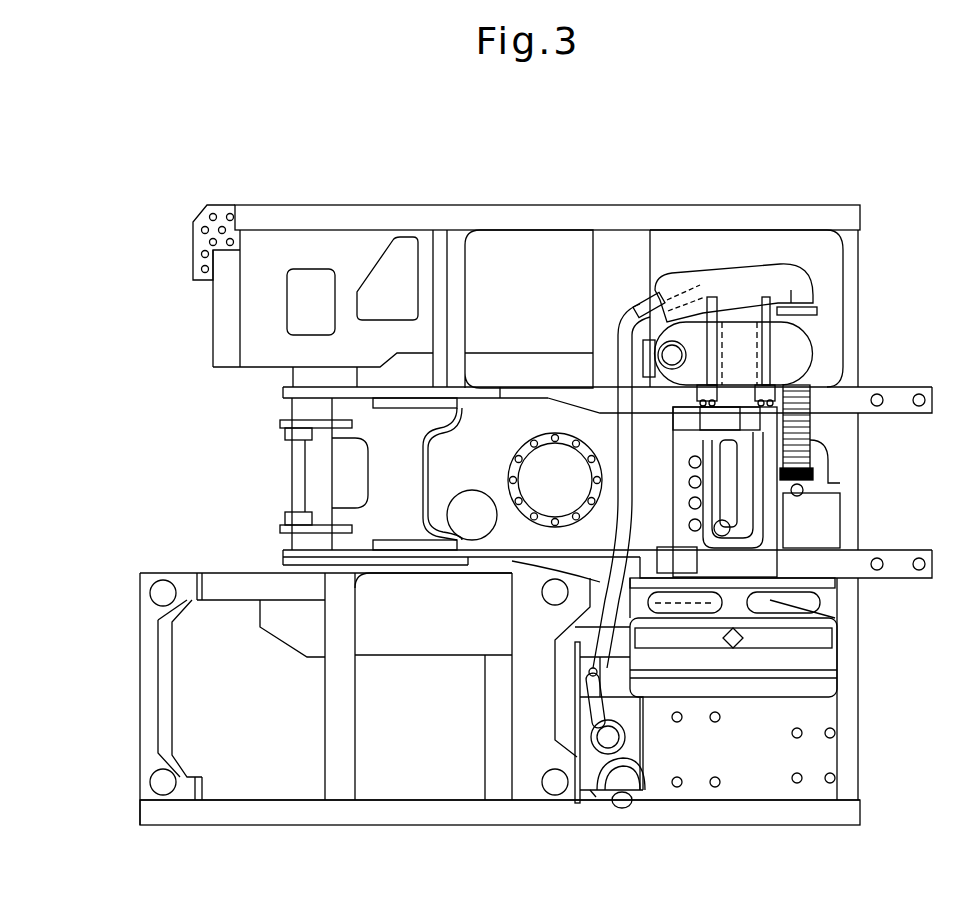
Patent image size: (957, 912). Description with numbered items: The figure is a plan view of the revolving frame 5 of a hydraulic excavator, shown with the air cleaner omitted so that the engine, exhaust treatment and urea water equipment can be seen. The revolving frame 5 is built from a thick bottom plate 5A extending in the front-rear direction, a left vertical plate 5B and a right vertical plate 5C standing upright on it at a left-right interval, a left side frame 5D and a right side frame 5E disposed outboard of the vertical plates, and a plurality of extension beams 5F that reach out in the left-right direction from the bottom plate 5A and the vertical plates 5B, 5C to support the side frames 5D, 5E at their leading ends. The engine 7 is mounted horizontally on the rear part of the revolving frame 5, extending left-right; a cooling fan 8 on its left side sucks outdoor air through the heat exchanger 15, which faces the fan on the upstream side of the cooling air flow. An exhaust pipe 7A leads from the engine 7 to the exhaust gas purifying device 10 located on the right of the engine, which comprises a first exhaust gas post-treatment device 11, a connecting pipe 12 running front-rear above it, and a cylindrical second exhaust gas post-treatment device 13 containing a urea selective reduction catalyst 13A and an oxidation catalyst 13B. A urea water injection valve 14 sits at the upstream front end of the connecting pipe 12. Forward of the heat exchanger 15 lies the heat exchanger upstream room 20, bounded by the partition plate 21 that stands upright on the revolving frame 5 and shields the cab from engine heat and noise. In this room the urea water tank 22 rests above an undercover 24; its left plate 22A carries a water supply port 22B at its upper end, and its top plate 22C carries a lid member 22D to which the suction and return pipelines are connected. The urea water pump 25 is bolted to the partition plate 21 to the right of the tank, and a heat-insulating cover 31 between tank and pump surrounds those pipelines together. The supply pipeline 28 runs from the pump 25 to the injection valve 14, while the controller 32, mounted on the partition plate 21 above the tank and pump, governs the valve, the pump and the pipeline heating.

The revolving frame 5 is at (533, 200).
The bottom plate 5A is at (320, 476).
The left vertical plate 5B is at (390, 565).
The right vertical plate 5C is at (500, 387).
The left side frame 5D is at (471, 806).
The right side frame 5E is at (340, 222).
The extension beams 5F is at (446, 250).
The engine 7 is at (795, 477).
The exhaust pipe 7A is at (795, 395).
The cooling fan 8 is at (790, 596).
The exhaust gas purifying device 10 is at (747, 262).
The first exhaust gas post-treatment device 11 is at (680, 272).
The connecting pipe 12 is at (791, 290).
The second exhaust gas post-treatment device 13 is at (787, 360).
The urea selective reduction catalyst 13A is at (770, 345).
The oxidation catalyst 13B is at (790, 310).
The urea water injection valve 14 is at (646, 300).
The heat exchanger 15 is at (760, 660).
The heat exchanger upstream room 20 is at (758, 750).
The partition plate 21 is at (575, 752).
The urea water tank 22 is at (650, 795).
The left plate 22A is at (593, 797).
The water supply port 22B is at (622, 808).
The top plate 22C is at (630, 766).
The lid member 22D is at (625, 737).
The undercover 24 is at (800, 757).
The urea water pump 25 is at (590, 677).
The supply pipeline 28 is at (607, 620).
The heat-insulating cover 31 is at (600, 727).
The controller 32 is at (587, 670).